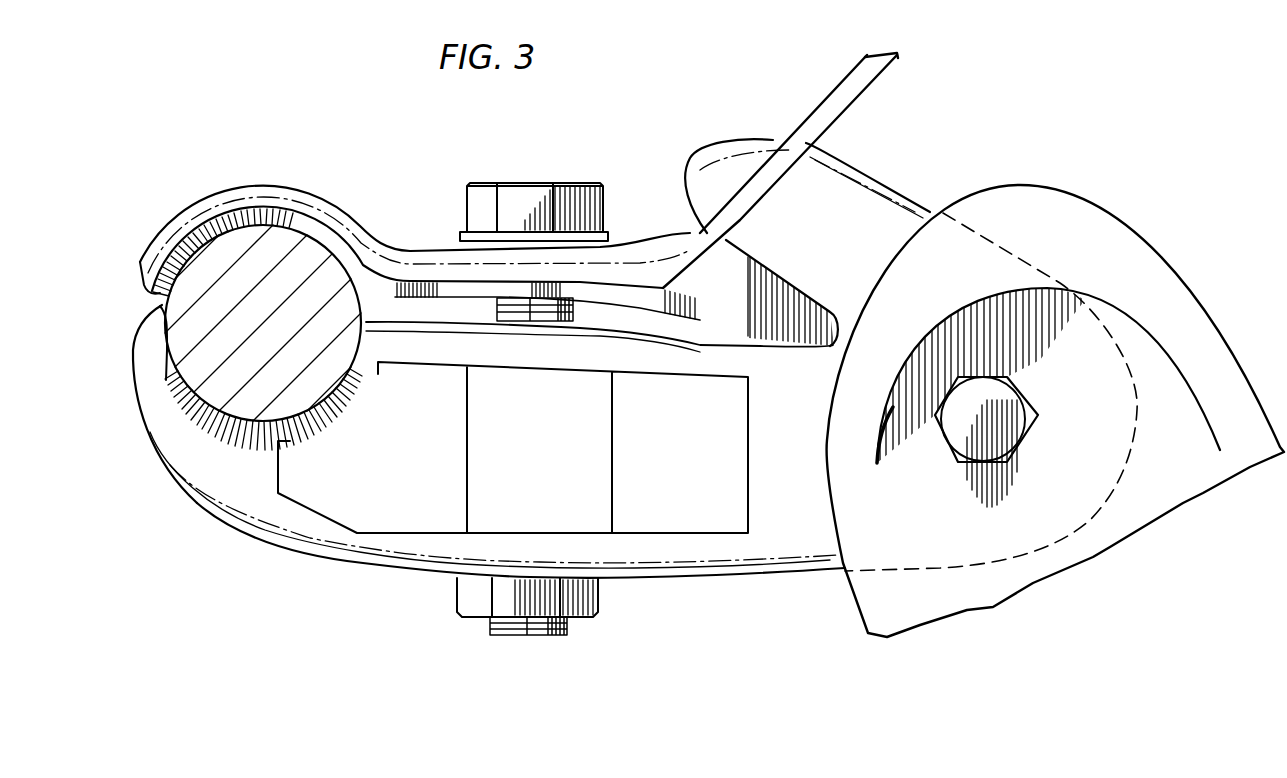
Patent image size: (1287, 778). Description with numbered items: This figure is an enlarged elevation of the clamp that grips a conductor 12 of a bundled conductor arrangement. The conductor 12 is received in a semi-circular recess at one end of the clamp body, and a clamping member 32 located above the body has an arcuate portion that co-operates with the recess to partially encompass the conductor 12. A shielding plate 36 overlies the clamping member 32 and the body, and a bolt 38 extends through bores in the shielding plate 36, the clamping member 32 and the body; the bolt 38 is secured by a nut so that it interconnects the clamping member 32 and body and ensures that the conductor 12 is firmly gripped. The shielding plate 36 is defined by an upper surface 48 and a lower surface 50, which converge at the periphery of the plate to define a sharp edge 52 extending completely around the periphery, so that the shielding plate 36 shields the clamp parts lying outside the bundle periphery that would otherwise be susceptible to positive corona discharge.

The conductor 12 is at (160, 304).
The clamping member 32 is at (714, 311).
The shielding plate 36 is at (255, 188).
The bolt 38 is at (530, 182).
The upper surface 48 is at (835, 90).
The lower surface 50 is at (873, 91).
The sharp edge 52 is at (448, 288).